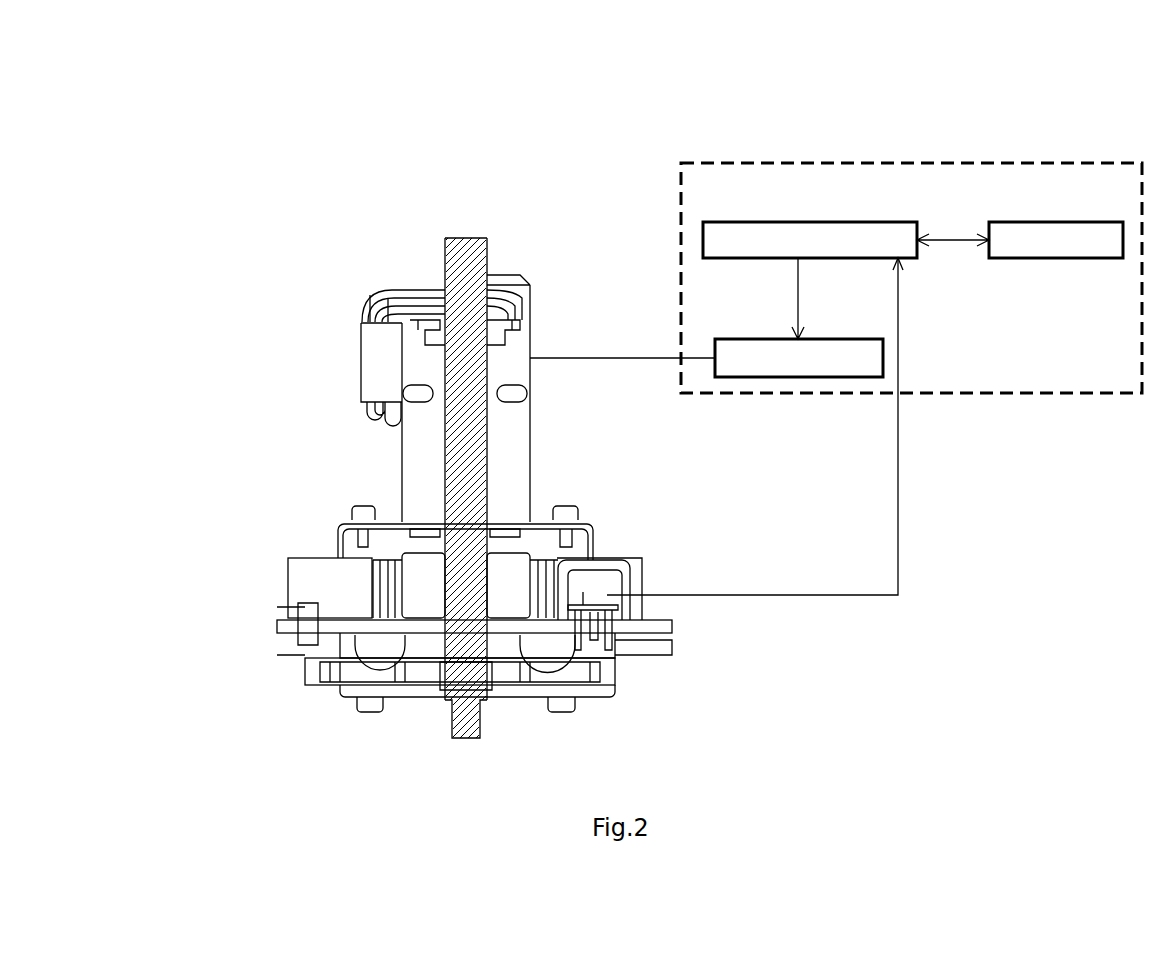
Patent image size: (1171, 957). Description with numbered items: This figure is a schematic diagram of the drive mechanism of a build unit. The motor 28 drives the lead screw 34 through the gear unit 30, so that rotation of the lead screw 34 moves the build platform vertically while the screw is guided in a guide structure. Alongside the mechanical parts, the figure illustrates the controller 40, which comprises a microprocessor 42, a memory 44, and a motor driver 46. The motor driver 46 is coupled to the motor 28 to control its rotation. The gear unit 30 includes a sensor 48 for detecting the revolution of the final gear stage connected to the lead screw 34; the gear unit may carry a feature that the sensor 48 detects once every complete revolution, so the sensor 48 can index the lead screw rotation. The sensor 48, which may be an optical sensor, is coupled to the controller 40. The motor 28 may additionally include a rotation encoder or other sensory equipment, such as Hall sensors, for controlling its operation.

The motor 28 is at (417, 447).
The gear unit 30 is at (317, 670).
The lead screw 34 is at (463, 380).
The controller 40 is at (987, 384).
The microprocessor 42 is at (713, 240).
The memory 44 is at (1103, 233).
The motor driver 46 is at (783, 368).
The sensor 48 is at (608, 620).